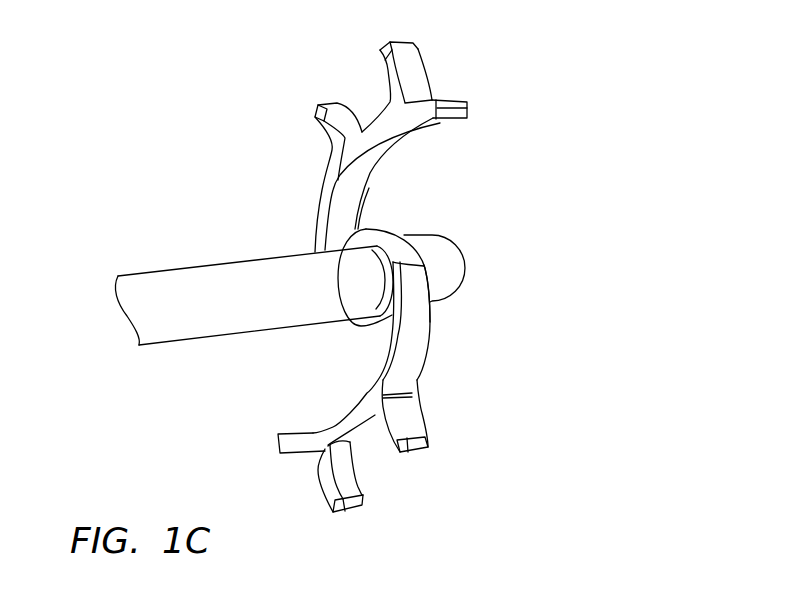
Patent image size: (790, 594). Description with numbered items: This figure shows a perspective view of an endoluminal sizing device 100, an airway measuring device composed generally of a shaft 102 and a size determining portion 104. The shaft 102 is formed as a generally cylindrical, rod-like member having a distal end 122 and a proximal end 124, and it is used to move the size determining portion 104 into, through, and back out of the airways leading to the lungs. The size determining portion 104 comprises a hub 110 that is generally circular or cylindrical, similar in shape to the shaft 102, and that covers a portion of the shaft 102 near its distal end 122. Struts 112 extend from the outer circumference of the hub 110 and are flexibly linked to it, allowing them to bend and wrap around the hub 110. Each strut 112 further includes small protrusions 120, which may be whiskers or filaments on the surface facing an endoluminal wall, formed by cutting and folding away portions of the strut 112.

The endoluminal sizing device 100 is at (578, 317).
The shaft 102 is at (172, 281).
The size determining portion 104 is at (384, 492).
The hub 110 is at (395, 240).
The strut 112 is at (390, 137).
The small protrusion 120 is at (392, 75).
The distal end 122 is at (482, 267).
The proximal end 124 is at (106, 319).